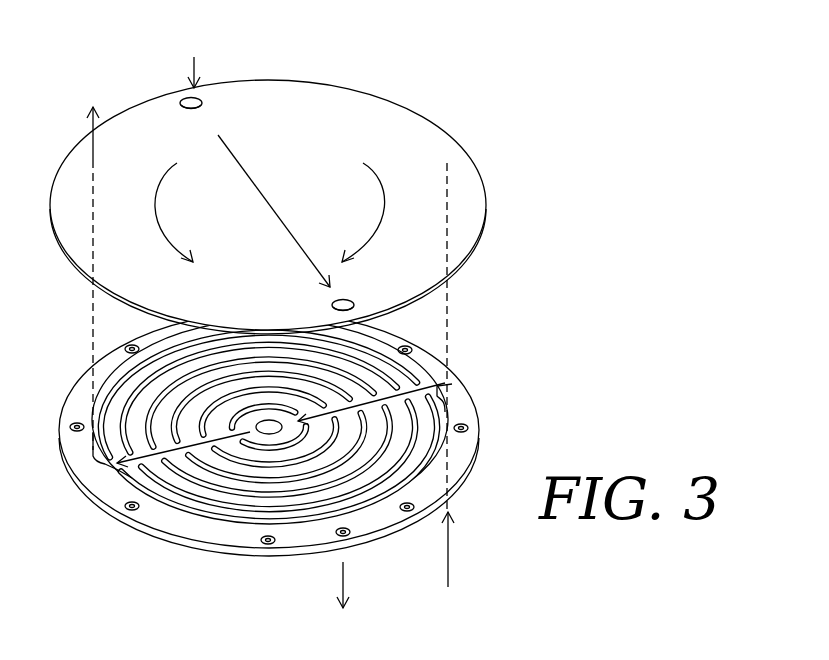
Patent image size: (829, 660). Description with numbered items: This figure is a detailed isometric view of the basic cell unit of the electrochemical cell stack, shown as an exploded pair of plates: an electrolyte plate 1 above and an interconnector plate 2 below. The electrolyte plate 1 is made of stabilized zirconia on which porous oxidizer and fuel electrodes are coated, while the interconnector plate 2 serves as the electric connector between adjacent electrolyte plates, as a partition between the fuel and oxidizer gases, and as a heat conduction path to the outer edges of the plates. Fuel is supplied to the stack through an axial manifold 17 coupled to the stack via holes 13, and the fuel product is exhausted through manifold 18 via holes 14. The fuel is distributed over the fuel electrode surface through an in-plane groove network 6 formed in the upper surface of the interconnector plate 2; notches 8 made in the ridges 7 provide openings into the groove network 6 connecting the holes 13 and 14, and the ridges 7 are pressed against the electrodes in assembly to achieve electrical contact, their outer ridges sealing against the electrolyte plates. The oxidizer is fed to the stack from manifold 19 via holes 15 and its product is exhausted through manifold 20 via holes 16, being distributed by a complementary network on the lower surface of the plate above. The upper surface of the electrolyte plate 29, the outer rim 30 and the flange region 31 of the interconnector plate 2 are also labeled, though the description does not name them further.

The electrolyte plate 1 is at (290, 195).
The interconnector plate 2 is at (295, 353).
The in-plane groove network 6 is at (104, 393).
The ridges 7 is at (190, 516).
The notches 8 is at (414, 393).
The holes 13 is at (452, 152).
The holes 14 is at (100, 242).
The holes 15 is at (206, 103).
The holes 16 is at (341, 540).
The manifold 17 is at (516, 375).
The manifold 18 is at (92, 256).
The manifold 19 is at (191, 52).
The manifold 20 is at (388, 602).
The plate surface 29 is at (293, 80).
The outer rim 30 is at (476, 402).
The flange 31 is at (462, 449).